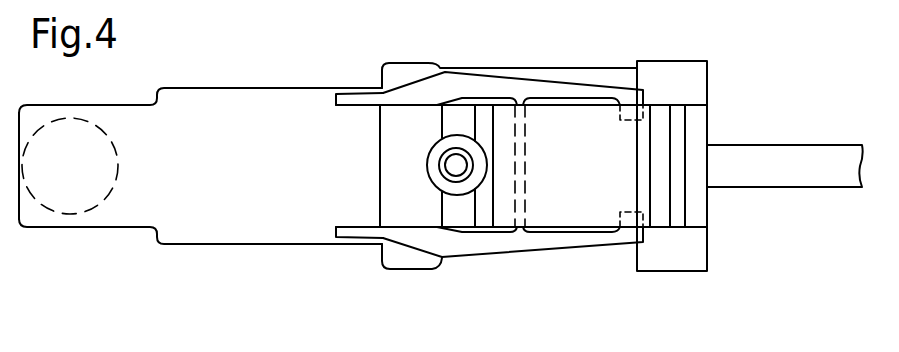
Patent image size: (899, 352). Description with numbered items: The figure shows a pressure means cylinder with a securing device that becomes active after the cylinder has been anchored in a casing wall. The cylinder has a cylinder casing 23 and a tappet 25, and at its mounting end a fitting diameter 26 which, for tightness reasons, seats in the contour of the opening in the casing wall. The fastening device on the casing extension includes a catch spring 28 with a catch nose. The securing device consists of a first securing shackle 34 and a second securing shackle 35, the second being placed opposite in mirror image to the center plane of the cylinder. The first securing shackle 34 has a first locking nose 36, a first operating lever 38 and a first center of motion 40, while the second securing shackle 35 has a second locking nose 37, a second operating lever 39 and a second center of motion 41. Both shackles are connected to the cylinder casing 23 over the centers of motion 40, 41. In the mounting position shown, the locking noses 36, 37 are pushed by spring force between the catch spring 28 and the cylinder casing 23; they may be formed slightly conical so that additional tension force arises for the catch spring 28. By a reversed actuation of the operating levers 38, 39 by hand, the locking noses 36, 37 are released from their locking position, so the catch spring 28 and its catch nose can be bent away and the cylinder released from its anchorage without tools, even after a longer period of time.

The cylinder casing 23 is at (250, 230).
The tappet 25 is at (782, 180).
The fitting diameter 26 is at (672, 271).
The catch spring 28 is at (593, 125).
The first securing shackle 34 is at (550, 92).
The second securing shackle 35 is at (543, 242).
The first locking nose 36 is at (628, 118).
The second locking nose 37 is at (627, 218).
The first operating lever 38 is at (340, 94).
The second operating lever 39 is at (348, 232).
The first center of motion 40 is at (518, 100).
The second center of motion 41 is at (517, 230).